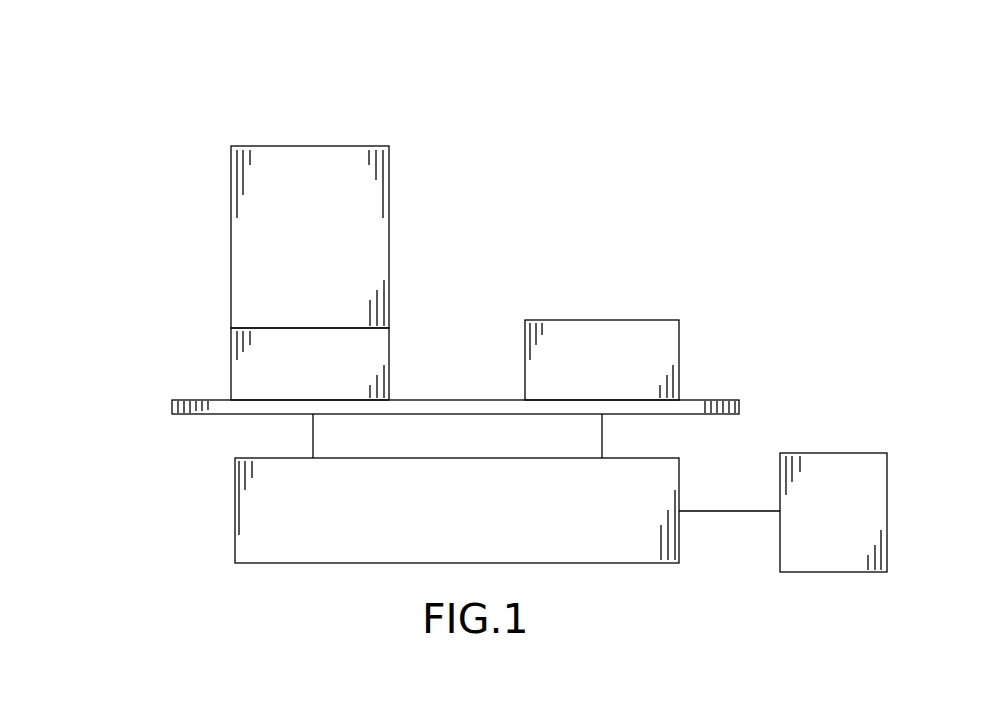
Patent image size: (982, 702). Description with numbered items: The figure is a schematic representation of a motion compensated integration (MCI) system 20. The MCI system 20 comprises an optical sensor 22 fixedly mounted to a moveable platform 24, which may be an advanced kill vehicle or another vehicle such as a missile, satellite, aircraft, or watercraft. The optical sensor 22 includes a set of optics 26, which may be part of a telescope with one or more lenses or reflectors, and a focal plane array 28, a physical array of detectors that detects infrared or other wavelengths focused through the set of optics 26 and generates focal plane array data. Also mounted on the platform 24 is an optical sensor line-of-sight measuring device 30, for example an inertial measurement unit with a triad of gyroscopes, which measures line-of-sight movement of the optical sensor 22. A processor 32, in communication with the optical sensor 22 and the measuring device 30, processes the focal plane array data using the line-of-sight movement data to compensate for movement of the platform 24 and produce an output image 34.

The motion compensated integration (MCI) system 20 is at (777, 82).
The optical sensor 22 is at (174, 147).
The moveable platform 24 is at (718, 400).
The set of optics 26 is at (390, 200).
The focal plane array 28 is at (231, 364).
The optical sensor line-of-sight (LOS) measuring device 30 is at (610, 320).
The processor 32 is at (235, 497).
The output image 34 is at (840, 453).